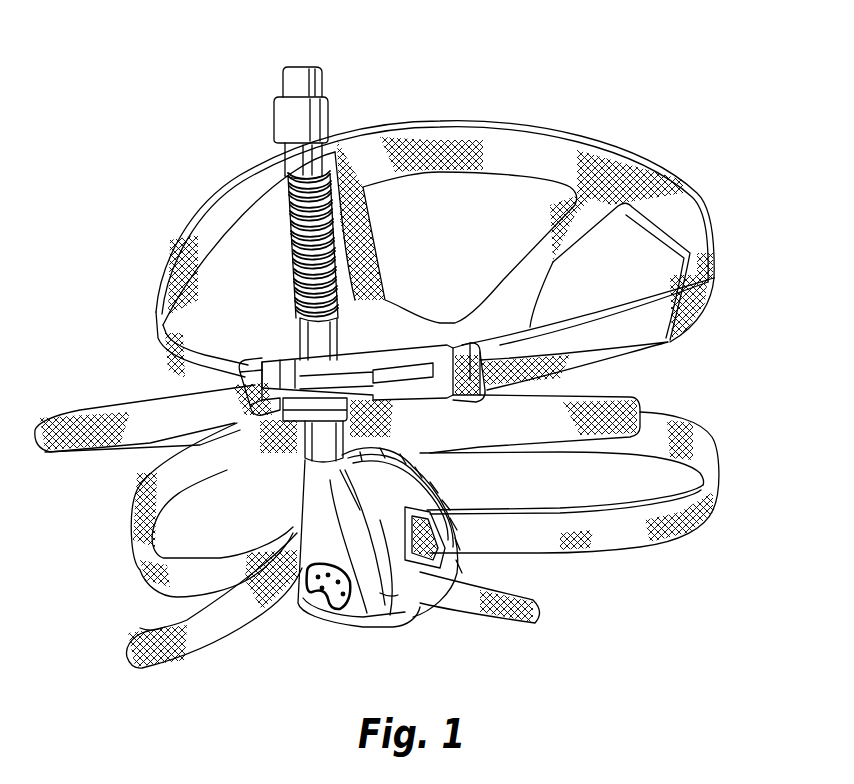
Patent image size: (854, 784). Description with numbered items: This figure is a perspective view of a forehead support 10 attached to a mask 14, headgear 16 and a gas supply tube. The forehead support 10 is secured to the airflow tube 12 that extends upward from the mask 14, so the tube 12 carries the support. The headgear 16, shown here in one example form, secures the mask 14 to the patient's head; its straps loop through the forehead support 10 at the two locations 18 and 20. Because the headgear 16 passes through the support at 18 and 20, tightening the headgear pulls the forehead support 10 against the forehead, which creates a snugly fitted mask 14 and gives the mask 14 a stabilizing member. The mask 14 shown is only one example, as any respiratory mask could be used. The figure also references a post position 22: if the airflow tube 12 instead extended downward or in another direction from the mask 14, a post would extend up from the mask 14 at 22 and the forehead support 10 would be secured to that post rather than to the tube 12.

The forehead support 10 is at (383, 342).
The airflow tube 12 is at (280, 90).
The mask 14 is at (357, 612).
The headgear 16 is at (537, 157).
The headgear loop location 18 is at (233, 368).
The headgear loop location 20 is at (668, 342).
The post position 22 is at (320, 437).